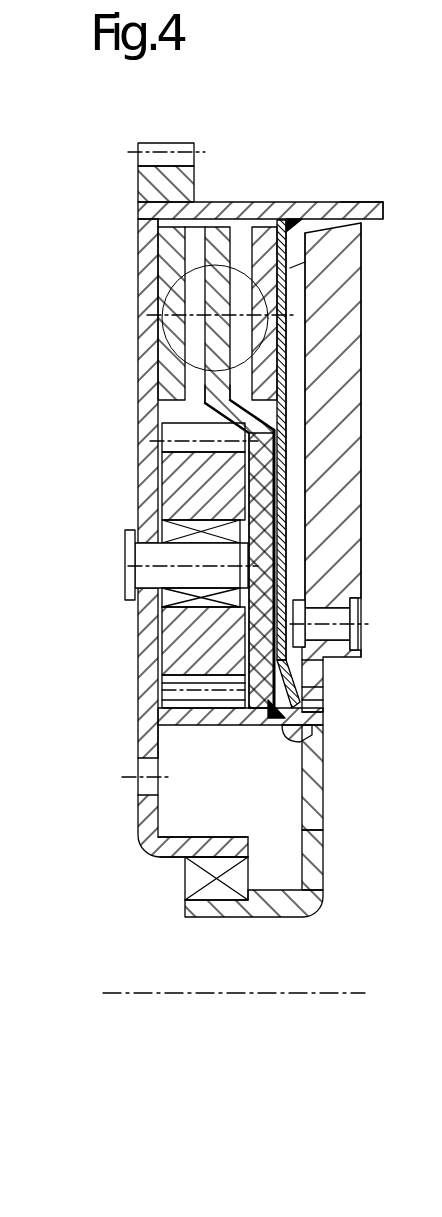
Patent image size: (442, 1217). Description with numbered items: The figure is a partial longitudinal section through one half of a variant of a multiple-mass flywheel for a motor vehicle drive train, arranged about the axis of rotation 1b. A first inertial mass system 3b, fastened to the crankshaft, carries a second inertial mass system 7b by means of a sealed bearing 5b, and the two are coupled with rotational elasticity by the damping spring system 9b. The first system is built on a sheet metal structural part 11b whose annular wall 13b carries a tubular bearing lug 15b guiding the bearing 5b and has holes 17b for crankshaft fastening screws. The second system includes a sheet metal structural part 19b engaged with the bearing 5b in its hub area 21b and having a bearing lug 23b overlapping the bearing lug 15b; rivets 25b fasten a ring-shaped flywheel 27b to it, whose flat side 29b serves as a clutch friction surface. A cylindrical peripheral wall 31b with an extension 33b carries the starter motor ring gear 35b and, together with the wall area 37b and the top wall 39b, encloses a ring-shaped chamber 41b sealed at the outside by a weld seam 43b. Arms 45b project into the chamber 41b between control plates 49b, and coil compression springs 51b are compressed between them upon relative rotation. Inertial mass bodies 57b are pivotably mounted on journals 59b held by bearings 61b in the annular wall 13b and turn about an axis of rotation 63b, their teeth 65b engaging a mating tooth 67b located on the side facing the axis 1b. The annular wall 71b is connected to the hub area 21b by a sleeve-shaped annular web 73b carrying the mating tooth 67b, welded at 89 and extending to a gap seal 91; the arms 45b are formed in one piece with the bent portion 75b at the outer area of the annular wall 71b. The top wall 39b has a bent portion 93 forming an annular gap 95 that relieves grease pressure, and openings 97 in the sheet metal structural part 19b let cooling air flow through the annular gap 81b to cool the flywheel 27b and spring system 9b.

The axis of rotation 1b is at (205, 994).
The inertial mass system 3b is at (136, 386).
The bearing 5b is at (197, 876).
The inertial mass system 7b is at (362, 531).
The damping spring system 9b is at (200, 298).
The sheet metal structural part 11b is at (136, 678).
The annular wall 13b is at (145, 488).
The bearing lug 15b is at (227, 847).
The holes 17b is at (142, 797).
The sheet metal structural part 19b is at (325, 781).
The hub area 21b is at (315, 830).
The bearing lug 23b is at (258, 905).
The rivets 25b is at (337, 617).
The flywheel 27b is at (342, 442).
The flat side 29b is at (362, 368).
The cylindrical peripheral wall 31b is at (262, 210).
The extension 33b is at (352, 210).
The starter motor ring gear 35b is at (147, 181).
The wall area 37b is at (150, 320).
The top wall 39b is at (277, 342).
The chamber 41b is at (150, 425).
The weld seam 43b is at (316, 228).
The arms 45b is at (218, 237).
The control plates 49b is at (145, 234).
The coil compression springs 51b is at (142, 358).
The inertial mass bodies 57b is at (178, 632).
The journals 59b is at (140, 581).
The bearings 61b is at (160, 523).
The axis of rotation 63b is at (135, 556).
The teeth 65b is at (202, 388).
The mating tooth 67b is at (240, 700).
The annular wall 71b is at (282, 475).
The annular web 73b is at (325, 745).
The bent portion 75b is at (243, 417).
The annular gap 81b is at (293, 572).
The weld 89 is at (318, 717).
The gap seal 91 is at (160, 741).
The bent portion 93 is at (327, 697).
The annular gap 95 is at (330, 688).
The openings 97 is at (315, 675).